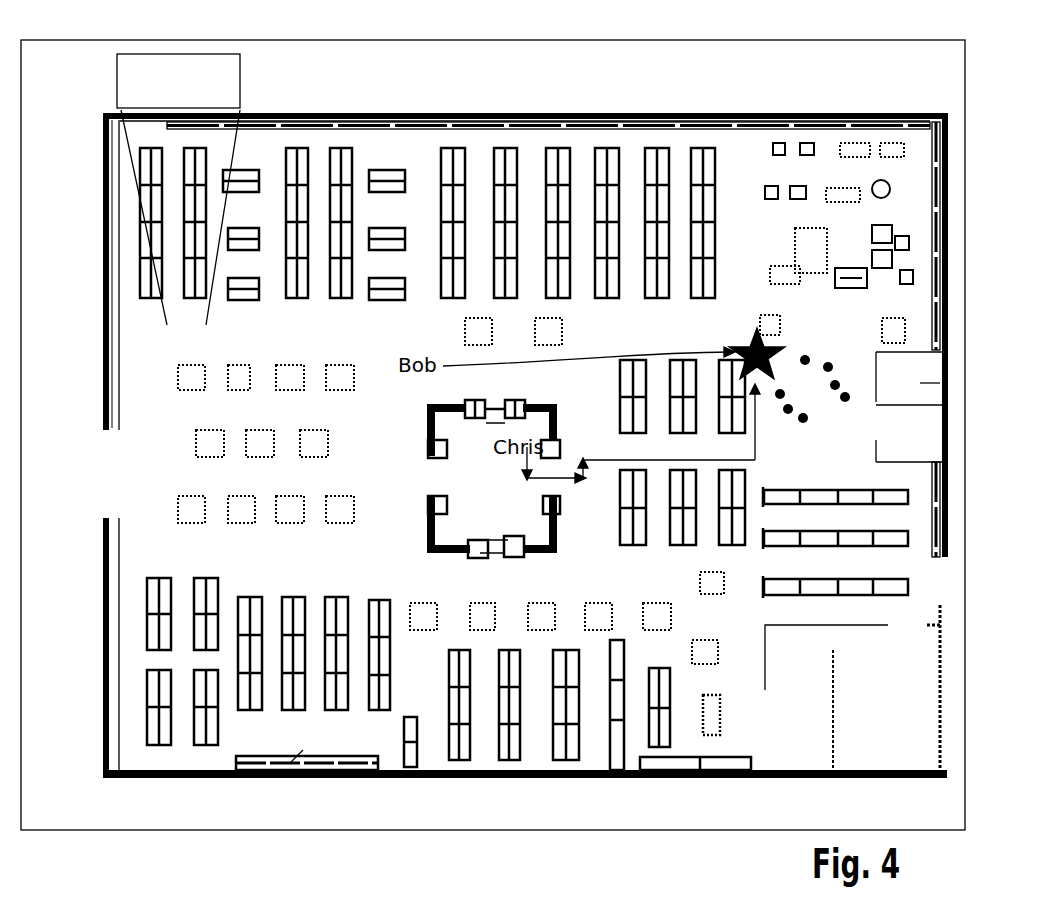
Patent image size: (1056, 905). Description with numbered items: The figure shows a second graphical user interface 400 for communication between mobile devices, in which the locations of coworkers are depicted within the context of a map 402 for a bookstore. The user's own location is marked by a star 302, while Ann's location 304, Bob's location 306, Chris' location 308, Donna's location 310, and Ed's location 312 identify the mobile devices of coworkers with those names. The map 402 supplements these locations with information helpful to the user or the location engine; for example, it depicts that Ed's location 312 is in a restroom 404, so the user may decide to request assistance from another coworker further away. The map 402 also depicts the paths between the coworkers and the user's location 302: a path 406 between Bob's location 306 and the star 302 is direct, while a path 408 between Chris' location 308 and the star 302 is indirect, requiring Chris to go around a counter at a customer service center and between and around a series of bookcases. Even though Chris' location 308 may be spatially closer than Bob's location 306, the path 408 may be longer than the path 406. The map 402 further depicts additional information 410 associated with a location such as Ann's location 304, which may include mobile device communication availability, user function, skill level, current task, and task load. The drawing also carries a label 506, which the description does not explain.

The second graphical user interface 400 is at (966, 97).
The map 402 is at (122, 779).
The restroom 404 is at (942, 405).
The path 406 is at (522, 357).
The path 408 is at (618, 462).
The additional information 410 is at (116, 103).
The star 302 is at (912, 352).
The Ann's location 304 is at (132, 340).
The Bob's location 306 is at (414, 345).
The Chris' location 308 is at (522, 452).
The Donna's location 310 is at (296, 780).
The Ed's location 312 is at (941, 383).
The back room area 506 is at (820, 697).